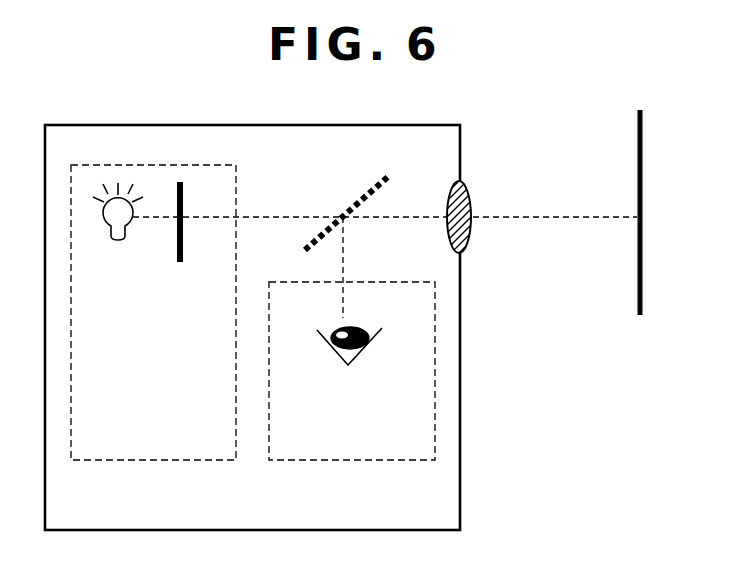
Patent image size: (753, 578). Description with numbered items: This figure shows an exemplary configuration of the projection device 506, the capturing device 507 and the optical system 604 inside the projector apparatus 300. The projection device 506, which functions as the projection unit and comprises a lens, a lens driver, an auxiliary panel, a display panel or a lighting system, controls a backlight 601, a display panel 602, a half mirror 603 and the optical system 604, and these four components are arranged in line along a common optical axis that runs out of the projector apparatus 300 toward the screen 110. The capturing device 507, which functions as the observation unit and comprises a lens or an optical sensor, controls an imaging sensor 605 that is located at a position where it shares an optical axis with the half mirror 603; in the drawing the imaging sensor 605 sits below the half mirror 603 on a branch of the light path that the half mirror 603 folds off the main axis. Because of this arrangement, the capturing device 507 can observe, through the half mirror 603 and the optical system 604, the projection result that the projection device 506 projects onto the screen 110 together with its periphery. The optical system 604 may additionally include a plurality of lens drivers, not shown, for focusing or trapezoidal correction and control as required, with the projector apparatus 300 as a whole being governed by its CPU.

The screen 110 is at (643, 136).
The projector apparatus 300 is at (462, 420).
The projection device 506 is at (215, 461).
The capturing device 507 is at (408, 461).
The backlight 601 is at (113, 237).
The display panel 602 is at (183, 246).
The half mirror 603 is at (380, 174).
The optical system 604 is at (468, 185).
The imaging sensor 605 is at (356, 360).